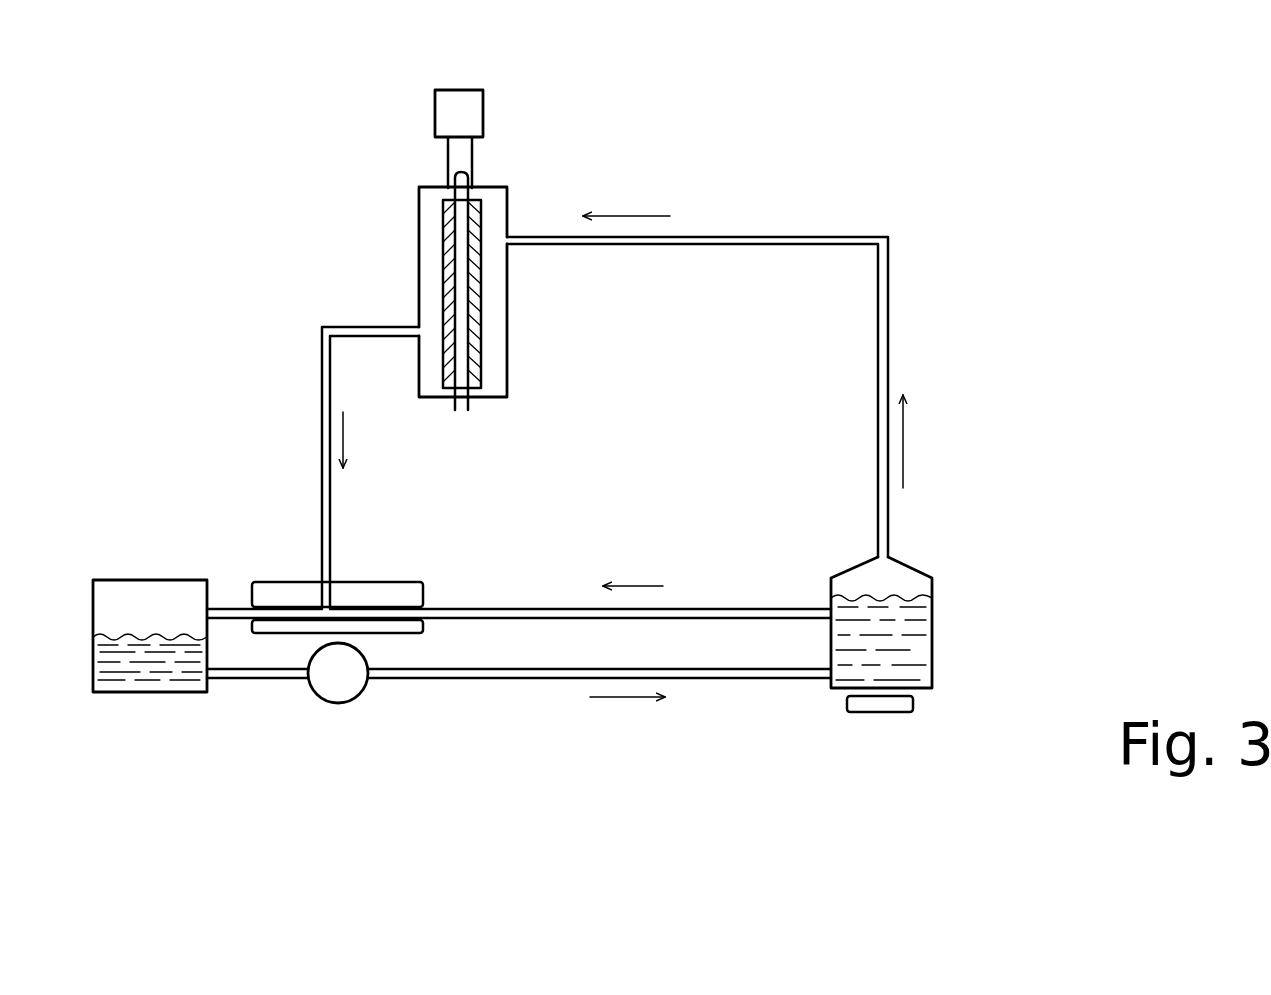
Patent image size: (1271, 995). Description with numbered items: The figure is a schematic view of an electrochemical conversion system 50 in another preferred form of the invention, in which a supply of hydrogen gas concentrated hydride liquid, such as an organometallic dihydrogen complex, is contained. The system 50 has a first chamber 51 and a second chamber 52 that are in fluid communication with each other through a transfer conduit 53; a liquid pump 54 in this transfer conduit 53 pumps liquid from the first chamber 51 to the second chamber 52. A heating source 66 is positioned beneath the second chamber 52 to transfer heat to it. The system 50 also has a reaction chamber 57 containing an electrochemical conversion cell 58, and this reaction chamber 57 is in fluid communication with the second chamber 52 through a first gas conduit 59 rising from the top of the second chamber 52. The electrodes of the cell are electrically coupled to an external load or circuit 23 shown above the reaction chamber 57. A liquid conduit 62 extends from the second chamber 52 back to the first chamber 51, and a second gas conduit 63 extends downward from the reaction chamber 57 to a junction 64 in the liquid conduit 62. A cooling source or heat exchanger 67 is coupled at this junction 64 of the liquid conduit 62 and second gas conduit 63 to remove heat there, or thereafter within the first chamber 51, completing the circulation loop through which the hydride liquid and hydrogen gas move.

The external load or circuit 23 is at (468, 100).
The electrochemical conversion system 50 is at (912, 118).
The first chamber 51 is at (125, 580).
The second chamber 52 is at (935, 635).
The transfer conduit 53 is at (525, 680).
The liquid pump 54 is at (338, 703).
The reaction chamber 57 is at (505, 207).
The electrochemical conversion cell 58 is at (488, 290).
The first gas conduit 59 is at (890, 323).
The liquid conduit 62 is at (740, 607).
The second gas conduit 63 is at (318, 375).
The junction 64 is at (340, 597).
The heating source 66 is at (893, 714).
The cooling source or heat exchanger 67 is at (412, 581).